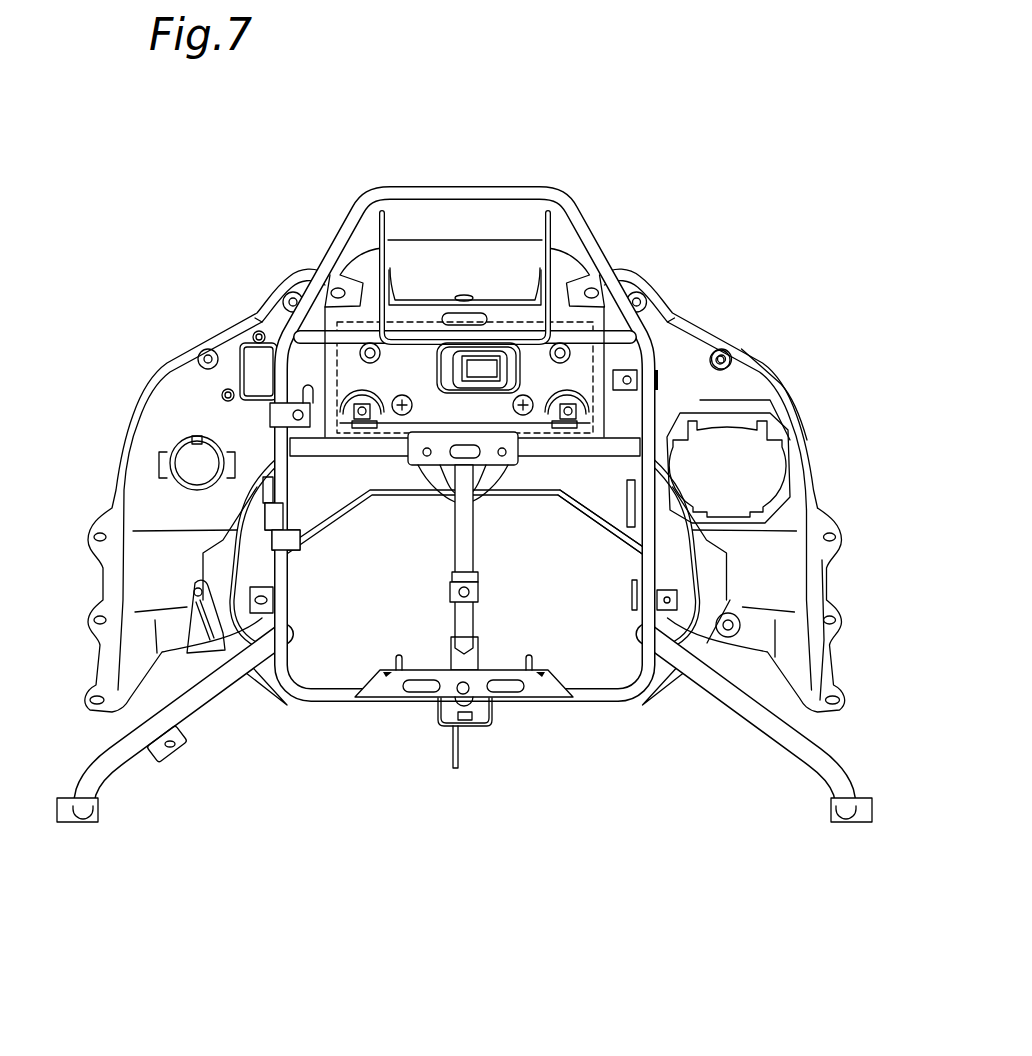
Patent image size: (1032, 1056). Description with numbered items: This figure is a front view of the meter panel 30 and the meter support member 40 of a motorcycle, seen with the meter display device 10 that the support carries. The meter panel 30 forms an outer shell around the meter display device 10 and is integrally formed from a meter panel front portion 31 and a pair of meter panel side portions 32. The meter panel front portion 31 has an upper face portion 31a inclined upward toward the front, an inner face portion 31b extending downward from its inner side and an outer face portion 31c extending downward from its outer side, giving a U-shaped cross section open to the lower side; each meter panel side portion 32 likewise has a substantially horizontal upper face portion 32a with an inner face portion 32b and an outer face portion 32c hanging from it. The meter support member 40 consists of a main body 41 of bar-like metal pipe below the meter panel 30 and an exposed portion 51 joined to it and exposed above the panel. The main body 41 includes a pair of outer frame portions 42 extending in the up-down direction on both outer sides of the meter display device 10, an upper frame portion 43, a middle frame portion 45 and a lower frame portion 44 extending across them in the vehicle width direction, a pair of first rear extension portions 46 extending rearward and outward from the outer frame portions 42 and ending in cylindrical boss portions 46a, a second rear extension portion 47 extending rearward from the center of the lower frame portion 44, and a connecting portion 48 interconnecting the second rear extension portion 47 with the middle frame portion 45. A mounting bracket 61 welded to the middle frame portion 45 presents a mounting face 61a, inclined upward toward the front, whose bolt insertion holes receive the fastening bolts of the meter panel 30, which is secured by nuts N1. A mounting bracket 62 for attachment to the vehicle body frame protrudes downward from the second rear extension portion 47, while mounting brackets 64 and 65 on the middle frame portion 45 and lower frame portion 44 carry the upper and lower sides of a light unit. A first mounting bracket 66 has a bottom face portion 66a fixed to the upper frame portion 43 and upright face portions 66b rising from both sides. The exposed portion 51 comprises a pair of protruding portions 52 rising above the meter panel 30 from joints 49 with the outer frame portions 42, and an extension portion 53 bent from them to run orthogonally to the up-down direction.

The meter display device 10 is at (337, 380).
The meter panel 30 is at (708, 314).
The meter panel front portion 31 is at (797, 414).
The upper face portion 31a is at (738, 392).
The inner face portion 31b is at (590, 503).
The outer face portion 31c is at (743, 340).
The meter panel side portion 32 is at (790, 570).
The upper face portion 32a is at (790, 584).
The inner face portion 32b is at (687, 620).
The outer face portion 32c is at (827, 645).
The meter support member 40 is at (450, 182).
The main body 41 is at (262, 438).
The outer frame portion 42 is at (278, 462).
The upper frame portion 43 is at (377, 340).
The lower frame portion 44 is at (330, 697).
The middle frame portion 45 is at (315, 452).
The first rear extension portion 46 is at (117, 745).
The boss portion 46a is at (73, 822).
The second rear extension portion 47 is at (450, 652).
The connecting portion 48 is at (453, 556).
The joint 49 is at (290, 343).
The exposed portion 51 is at (508, 182).
The protruding portion 52 is at (323, 250).
The extension portion 53 is at (412, 187).
The mounting bracket 61 is at (540, 437).
The mounting face 61a is at (425, 428).
The mounting bracket 62 is at (449, 755).
The mounting bracket 64 is at (439, 465).
The mounting bracket 65 is at (537, 692).
The first mounting bracket 66 is at (403, 313).
The bottom face portion 66a is at (432, 314).
The upright face portion 66b is at (343, 222).
The nut N1 is at (362, 426).